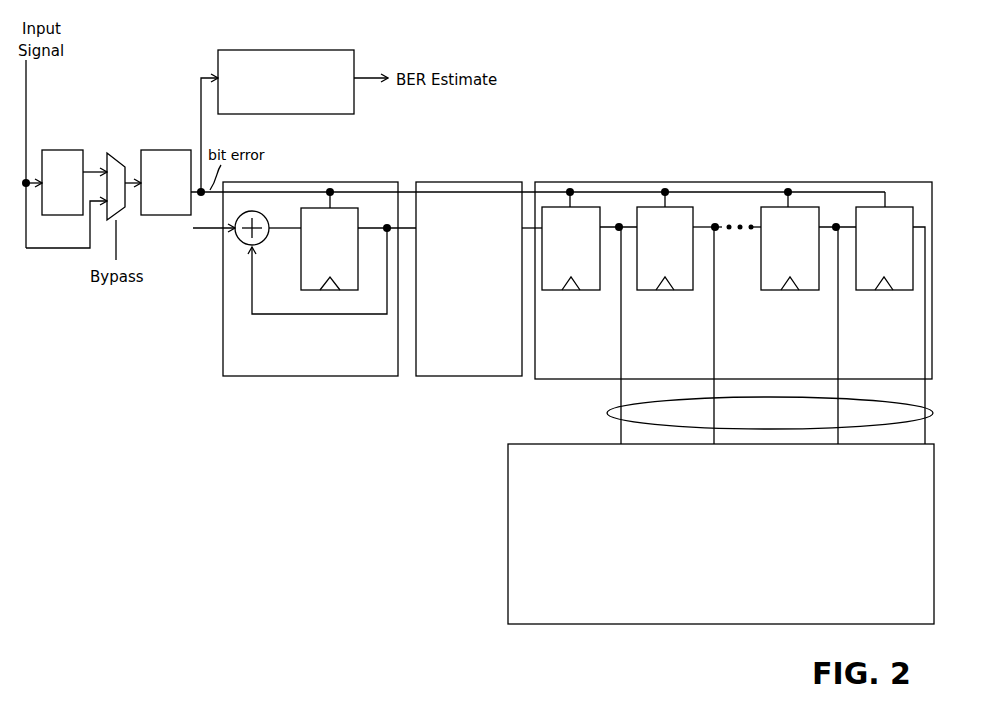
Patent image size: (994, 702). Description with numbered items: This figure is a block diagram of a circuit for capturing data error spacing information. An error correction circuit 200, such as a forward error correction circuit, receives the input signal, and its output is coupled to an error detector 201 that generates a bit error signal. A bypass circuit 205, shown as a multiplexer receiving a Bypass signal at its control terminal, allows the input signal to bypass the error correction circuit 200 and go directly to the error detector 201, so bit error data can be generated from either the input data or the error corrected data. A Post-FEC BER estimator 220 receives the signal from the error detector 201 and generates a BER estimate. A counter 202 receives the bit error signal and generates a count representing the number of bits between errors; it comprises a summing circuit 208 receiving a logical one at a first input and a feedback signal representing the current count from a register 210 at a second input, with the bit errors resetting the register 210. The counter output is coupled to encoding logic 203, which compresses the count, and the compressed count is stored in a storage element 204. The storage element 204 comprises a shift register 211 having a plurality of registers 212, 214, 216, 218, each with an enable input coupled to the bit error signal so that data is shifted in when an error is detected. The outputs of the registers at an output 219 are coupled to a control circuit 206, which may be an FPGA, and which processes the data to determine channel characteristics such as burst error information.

The error correction circuit 200 is at (50, 150).
The error detector 201 is at (157, 150).
The counter 202 is at (299, 253).
The encoding logic 203 is at (468, 182).
The storage element 204 is at (540, 182).
The bypass circuit 205 is at (112, 155).
The control circuit 206 is at (508, 482).
The summing circuit 208 is at (262, 212).
The register 210 is at (338, 194).
The shift register 211 is at (738, 277).
The first enable register (EN) 212 is at (580, 207).
The register 214 is at (684, 207).
The register 216 is at (793, 207).
The register 218 is at (890, 207).
The output 219 is at (612, 418).
The Post-FEC BER estimator 220 is at (292, 50).